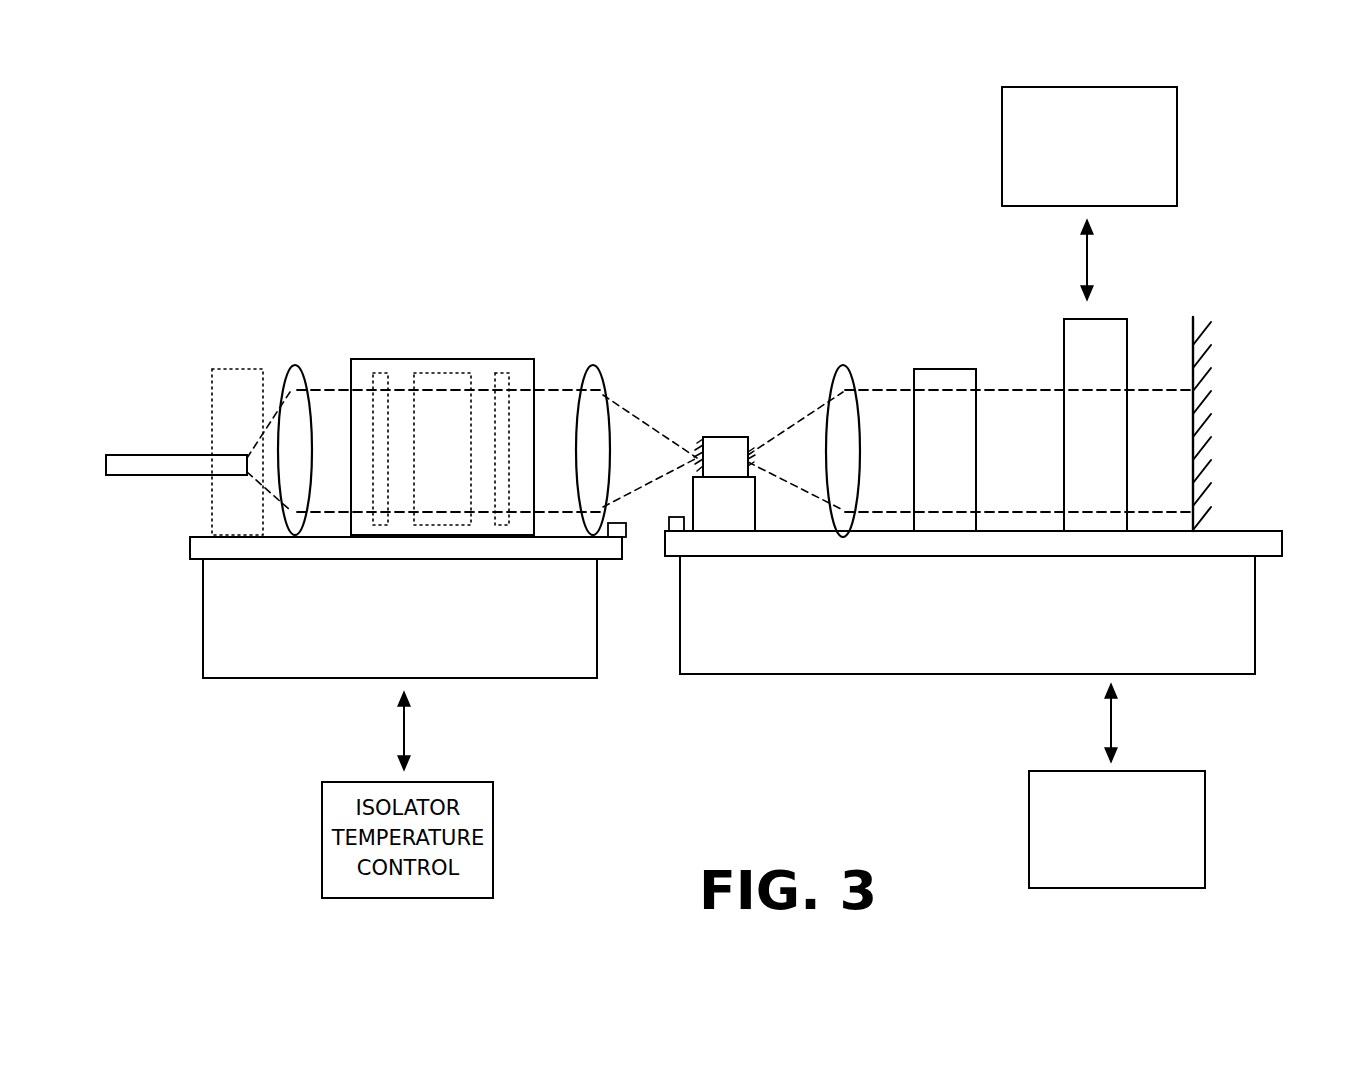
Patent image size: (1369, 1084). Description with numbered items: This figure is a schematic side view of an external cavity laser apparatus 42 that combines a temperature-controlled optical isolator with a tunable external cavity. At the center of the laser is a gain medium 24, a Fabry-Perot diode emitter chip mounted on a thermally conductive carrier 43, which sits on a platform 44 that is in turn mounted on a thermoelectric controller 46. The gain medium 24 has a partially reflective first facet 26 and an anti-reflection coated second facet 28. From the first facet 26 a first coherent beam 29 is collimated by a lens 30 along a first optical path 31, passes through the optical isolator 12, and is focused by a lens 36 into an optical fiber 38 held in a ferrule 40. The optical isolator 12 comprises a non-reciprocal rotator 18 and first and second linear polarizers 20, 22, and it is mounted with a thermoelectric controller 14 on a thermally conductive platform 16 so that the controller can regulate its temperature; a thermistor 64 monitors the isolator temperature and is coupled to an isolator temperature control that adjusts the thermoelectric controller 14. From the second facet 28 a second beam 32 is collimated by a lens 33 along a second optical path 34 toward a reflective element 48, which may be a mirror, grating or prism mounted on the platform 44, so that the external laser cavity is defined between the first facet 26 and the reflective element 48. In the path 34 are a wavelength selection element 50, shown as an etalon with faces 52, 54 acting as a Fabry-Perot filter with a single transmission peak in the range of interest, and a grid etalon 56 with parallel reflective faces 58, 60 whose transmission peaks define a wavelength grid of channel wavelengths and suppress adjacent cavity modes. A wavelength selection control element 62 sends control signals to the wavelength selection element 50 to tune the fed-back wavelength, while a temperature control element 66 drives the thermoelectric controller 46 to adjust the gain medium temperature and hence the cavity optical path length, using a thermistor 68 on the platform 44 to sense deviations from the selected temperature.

The optical isolator 12 is at (480, 366).
The thermoelectric controller 14 is at (550, 665).
The thermally conductive platform 16 is at (190, 547).
The non-reciprocal rotator 18 is at (435, 378).
The first linear polarizer 20 is at (500, 378).
The second linear polarizer 22 is at (378, 372).
The gain medium 24 is at (722, 437).
The partially reflective first facet 26 is at (697, 440).
The anti-reflection coated second facet 28 is at (752, 444).
The first coherent beam 29 is at (625, 410).
The lens 30 is at (595, 365).
The first optical path 31 is at (335, 395).
The second beam 32 is at (890, 420).
The lens 33 is at (838, 365).
The second optical path 34 is at (1005, 420).
The lens 36 is at (290, 368).
The optical fiber 38 is at (122, 463).
The ferrule 40 is at (212, 388).
The external cavity laser apparatus 42 is at (272, 785).
The thermally conductive carrier 43 is at (727, 508).
The platform 44 is at (1282, 546).
The thermoelectric controller 46 is at (1235, 630).
The reflective element 48 is at (1197, 322).
The wavelength selection element 50 is at (1097, 325).
The etalon face 52 is at (1062, 346).
The etalon face 54 is at (1130, 346).
The grid etalon 56 is at (940, 372).
The reflective face 58 is at (910, 490).
The reflective face 60 is at (980, 490).
The wavelength selection control element 62 is at (1177, 135).
The thermistor 64 is at (626, 537).
The temperature control element 66 is at (1205, 822).
The thermistor 68 is at (669, 520).